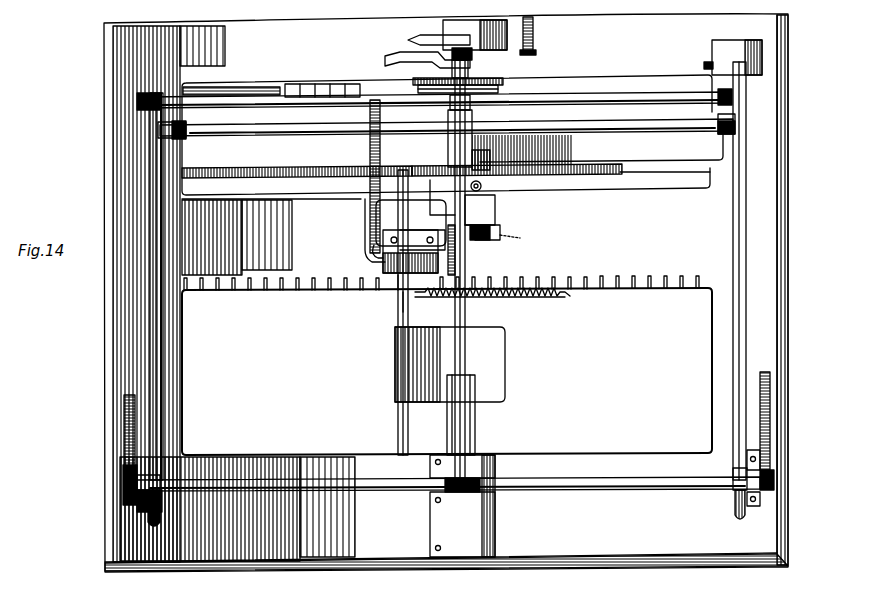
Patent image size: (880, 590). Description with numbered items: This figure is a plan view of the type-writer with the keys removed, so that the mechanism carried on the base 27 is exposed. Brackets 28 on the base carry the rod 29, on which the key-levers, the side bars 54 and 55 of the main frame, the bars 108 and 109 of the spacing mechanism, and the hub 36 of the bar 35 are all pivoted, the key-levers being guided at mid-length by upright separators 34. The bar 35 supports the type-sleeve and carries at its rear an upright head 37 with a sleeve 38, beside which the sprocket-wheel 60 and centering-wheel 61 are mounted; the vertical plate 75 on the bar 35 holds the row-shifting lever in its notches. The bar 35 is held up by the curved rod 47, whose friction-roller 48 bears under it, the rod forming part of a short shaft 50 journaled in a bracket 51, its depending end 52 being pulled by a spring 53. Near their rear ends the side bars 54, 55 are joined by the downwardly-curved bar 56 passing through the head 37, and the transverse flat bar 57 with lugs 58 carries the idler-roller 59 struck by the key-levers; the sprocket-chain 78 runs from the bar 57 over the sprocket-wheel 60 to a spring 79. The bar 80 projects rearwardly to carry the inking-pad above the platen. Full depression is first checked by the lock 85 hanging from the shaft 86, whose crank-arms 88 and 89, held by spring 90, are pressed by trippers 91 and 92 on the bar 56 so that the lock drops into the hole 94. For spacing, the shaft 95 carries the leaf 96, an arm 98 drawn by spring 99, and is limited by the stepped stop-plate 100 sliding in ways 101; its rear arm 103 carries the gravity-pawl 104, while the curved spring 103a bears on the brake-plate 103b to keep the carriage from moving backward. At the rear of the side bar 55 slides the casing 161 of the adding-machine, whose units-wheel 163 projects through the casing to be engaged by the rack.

The base 27 is at (795, 240).
The brackets 28 is at (122, 500).
The rod 29 is at (602, 490).
The upright separators 34 is at (270, 282).
The bar 35 is at (466, 349).
The hub 36 is at (446, 490).
The upright bar or head 37 is at (473, 116).
The sleeve 38 is at (485, 157).
The curved rod 47 is at (445, 228).
The friction-roller 48 is at (482, 186).
The short shaft 50 is at (392, 262).
The bracket 51 is at (398, 278).
The downwardly-depending end 52 is at (374, 252).
The spring 53 is at (366, 196).
The side bar 54 is at (163, 366).
The side bar 55 is at (733, 360).
The downwardly-curved bar 56 is at (620, 133).
The transverse flat bar 57 is at (137, 103).
The projecting lugs 58 is at (733, 98).
The idler-roller 59 is at (585, 92).
The sprocket-wheel 60 is at (459, 87).
The centering-wheel 61 is at (470, 70).
The vertical plate 75 is at (466, 258).
The sprocket-chain 78 is at (316, 88).
The spring 79 is at (250, 88).
The bar 80 is at (534, 32).
The bar or lock 85 is at (523, 230).
The horizontal bar or shaft 86 is at (500, 228).
The crank-arm 88 is at (415, 213).
The crank-arm 89 is at (496, 208).
The spring 90 is at (522, 150).
The tripper 91 is at (318, 170).
The tripper 92 is at (578, 165).
The hole 94 is at (491, 236).
The rod or shaft 95 is at (370, 154).
The plate or leaf 96 is at (506, 378).
The downwardly-projecting arm 98 is at (400, 302).
The spring 99 is at (524, 297).
The stop-plate 100 is at (476, 424).
The ways 101 is at (496, 524).
The upwardly-projecting arm 103 is at (400, 53).
The curved spring 103a is at (470, 60).
The brake-plate 103b is at (488, 25).
The gravity-pawl 104 is at (430, 35).
The bar 108 is at (124, 430).
The bar 109 is at (771, 425).
The casing 161 is at (737, 47).
The wheel 163 is at (706, 62).